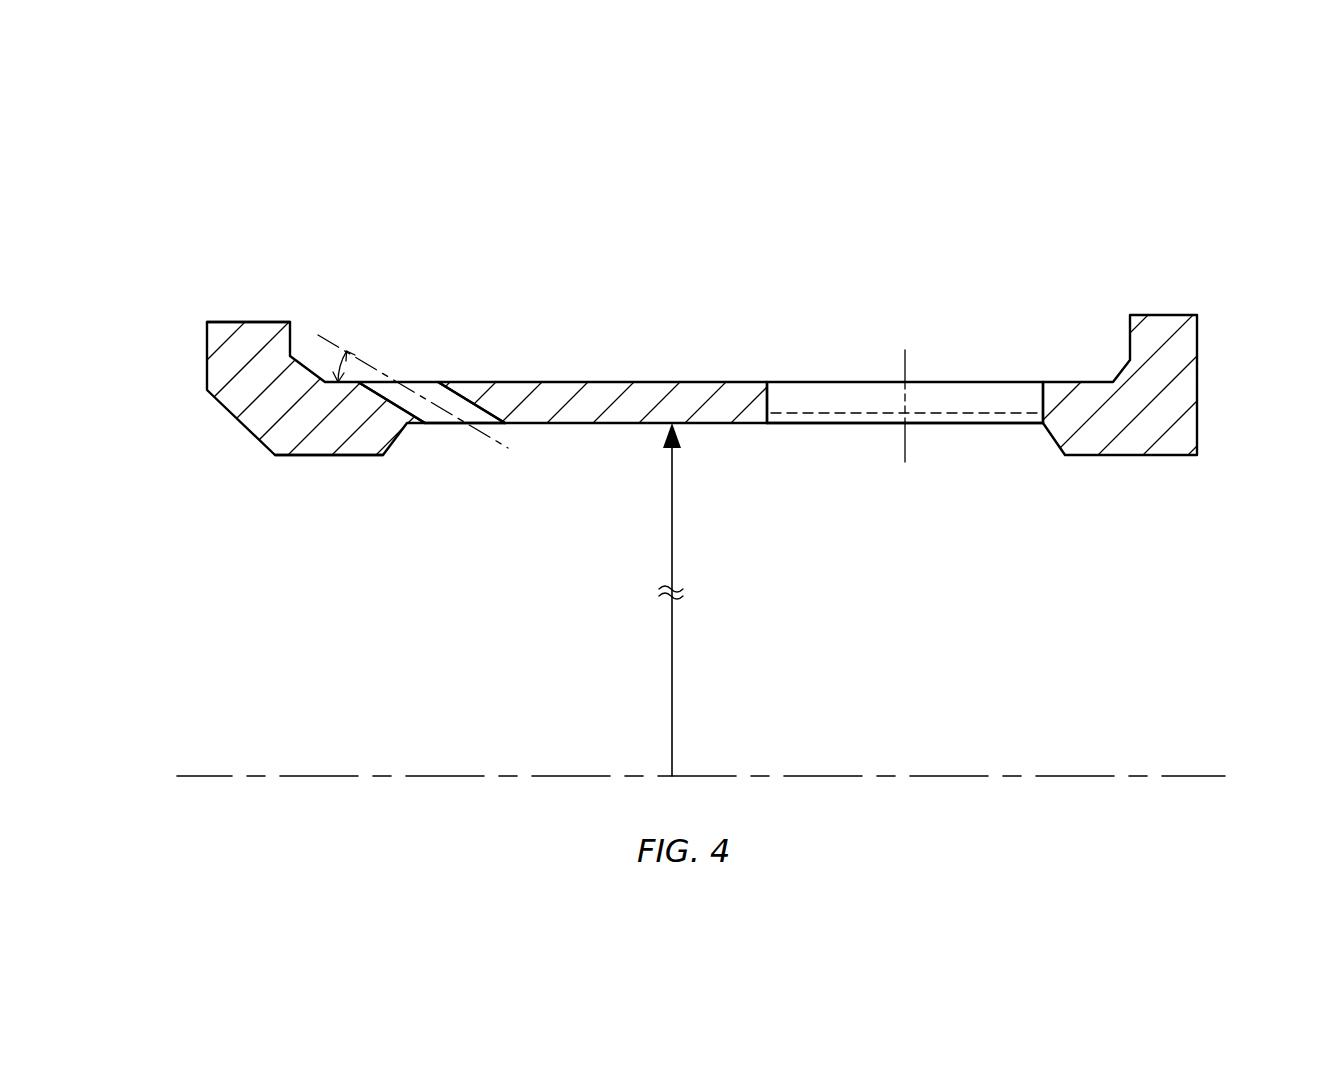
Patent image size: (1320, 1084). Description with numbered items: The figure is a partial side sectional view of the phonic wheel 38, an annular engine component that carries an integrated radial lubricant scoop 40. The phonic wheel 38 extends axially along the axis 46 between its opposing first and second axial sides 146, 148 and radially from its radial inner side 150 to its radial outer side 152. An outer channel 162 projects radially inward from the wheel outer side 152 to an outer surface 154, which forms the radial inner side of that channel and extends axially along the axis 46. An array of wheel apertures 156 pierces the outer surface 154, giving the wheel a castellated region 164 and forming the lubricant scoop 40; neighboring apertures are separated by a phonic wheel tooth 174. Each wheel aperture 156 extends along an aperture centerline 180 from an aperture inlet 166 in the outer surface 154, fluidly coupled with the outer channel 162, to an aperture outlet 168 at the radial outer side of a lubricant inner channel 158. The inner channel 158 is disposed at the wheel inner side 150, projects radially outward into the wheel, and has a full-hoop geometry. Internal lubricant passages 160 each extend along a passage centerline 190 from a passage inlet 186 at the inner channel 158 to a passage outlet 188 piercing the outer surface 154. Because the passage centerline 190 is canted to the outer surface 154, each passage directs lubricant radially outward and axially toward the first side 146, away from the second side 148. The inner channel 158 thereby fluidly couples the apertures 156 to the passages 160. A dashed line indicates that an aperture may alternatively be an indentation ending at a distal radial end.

The phonic wheel 38 is at (1134, 191).
The integrated radial lubricant scoop 40 is at (999, 284).
The castellated region 164 is at (945, 322).
The axis 46 is at (223, 778).
The first axial side 146 is at (207, 362).
The second axial side 148 is at (1198, 385).
The radial inner side 150 is at (317, 454).
The radial outer side 152 is at (247, 322).
The outer surface 154 is at (647, 382).
The wheel aperture 156 is at (876, 390).
The lubricant inner channel 158 is at (605, 455).
The internal lubricant passage 160 is at (460, 405).
The outer channel 162 is at (578, 335).
The aperture inlet 166 is at (798, 382).
The aperture outlet 168 is at (793, 423).
The phonic wheel tooth 174 is at (937, 423).
The aperture centerline 180 is at (907, 362).
The passage inlet 186 is at (448, 423).
The passage outlet 188 is at (418, 382).
The passage centerline 190 is at (340, 347).